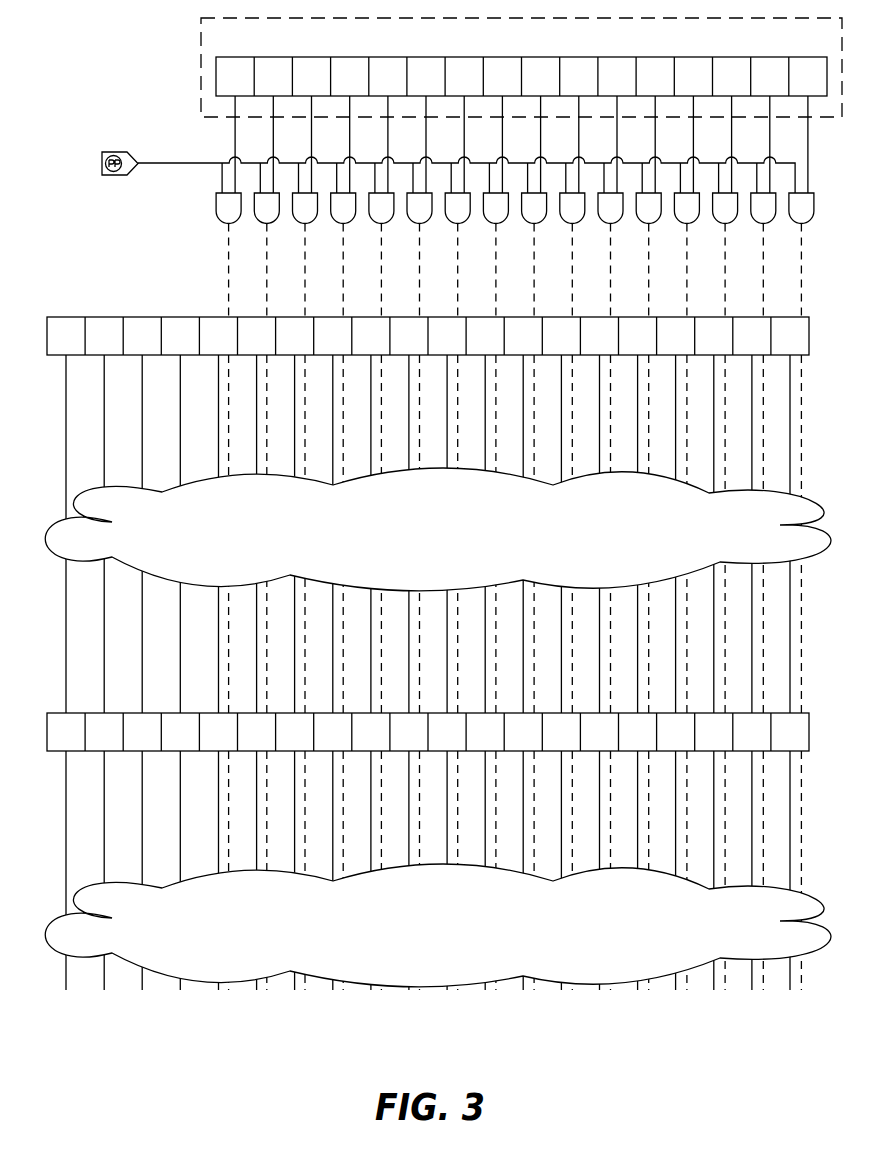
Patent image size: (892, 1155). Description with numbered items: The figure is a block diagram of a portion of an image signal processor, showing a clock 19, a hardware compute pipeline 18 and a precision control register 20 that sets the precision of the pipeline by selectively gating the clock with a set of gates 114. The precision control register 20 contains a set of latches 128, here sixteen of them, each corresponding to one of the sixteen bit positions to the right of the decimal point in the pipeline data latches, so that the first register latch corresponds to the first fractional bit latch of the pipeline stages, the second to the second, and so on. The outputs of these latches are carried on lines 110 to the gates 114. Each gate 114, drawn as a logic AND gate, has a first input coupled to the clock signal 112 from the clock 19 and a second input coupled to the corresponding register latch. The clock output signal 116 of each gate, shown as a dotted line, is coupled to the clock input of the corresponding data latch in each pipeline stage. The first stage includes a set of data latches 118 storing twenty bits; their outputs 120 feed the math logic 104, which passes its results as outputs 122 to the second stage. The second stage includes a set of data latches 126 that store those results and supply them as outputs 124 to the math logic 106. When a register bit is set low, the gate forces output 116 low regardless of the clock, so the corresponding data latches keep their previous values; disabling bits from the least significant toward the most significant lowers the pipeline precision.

The hardware compute pipeline 18 is at (95, 258).
The clock 19 is at (101, 160).
The precision control register 20 is at (201, 48).
The math logic 104 is at (421, 574).
The math logic 106 is at (421, 970).
The register bit output lines 110 is at (235, 143).
The clock signal 112 is at (197, 164).
The set of gates 114 is at (217, 199).
The clock output signal 116 is at (229, 292).
The set of data latches 118 is at (56, 357).
The outputs 120 is at (218, 375).
The outputs 122 is at (218, 604).
The outputs 124 is at (218, 779).
The set of data latches 126 is at (54, 752).
The set of latches 128 is at (237, 57).